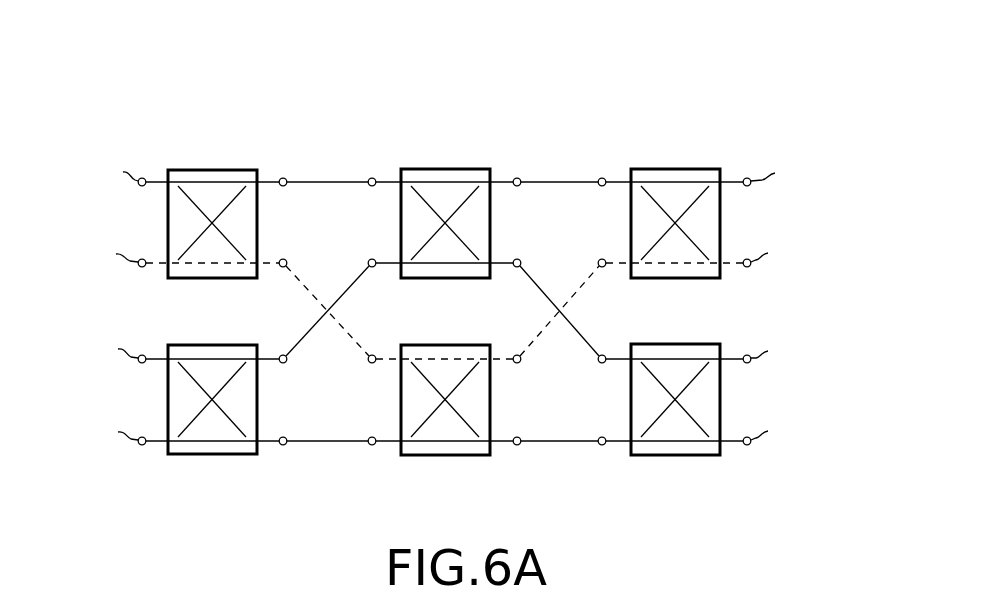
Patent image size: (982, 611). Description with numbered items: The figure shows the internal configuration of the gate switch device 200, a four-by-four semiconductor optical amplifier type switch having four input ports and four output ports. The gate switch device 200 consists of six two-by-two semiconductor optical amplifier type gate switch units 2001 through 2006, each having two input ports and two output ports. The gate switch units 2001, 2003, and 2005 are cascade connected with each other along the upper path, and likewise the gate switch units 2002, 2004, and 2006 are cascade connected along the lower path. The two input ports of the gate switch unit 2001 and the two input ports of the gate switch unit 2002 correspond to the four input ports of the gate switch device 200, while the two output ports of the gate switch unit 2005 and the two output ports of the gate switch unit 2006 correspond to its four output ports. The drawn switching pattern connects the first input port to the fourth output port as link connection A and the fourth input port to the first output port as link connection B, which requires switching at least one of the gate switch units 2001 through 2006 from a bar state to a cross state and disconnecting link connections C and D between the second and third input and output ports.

The gate switch device 200 is at (543, 92).
The gate switch unit 2001 is at (217, 169).
The gate switch unit 2002 is at (217, 454).
The gate switch unit 2003 is at (448, 169).
The gate switch unit 2004 is at (447, 455).
The gate switch unit 2005 is at (673, 169).
The gate switch unit 2006 is at (677, 455).